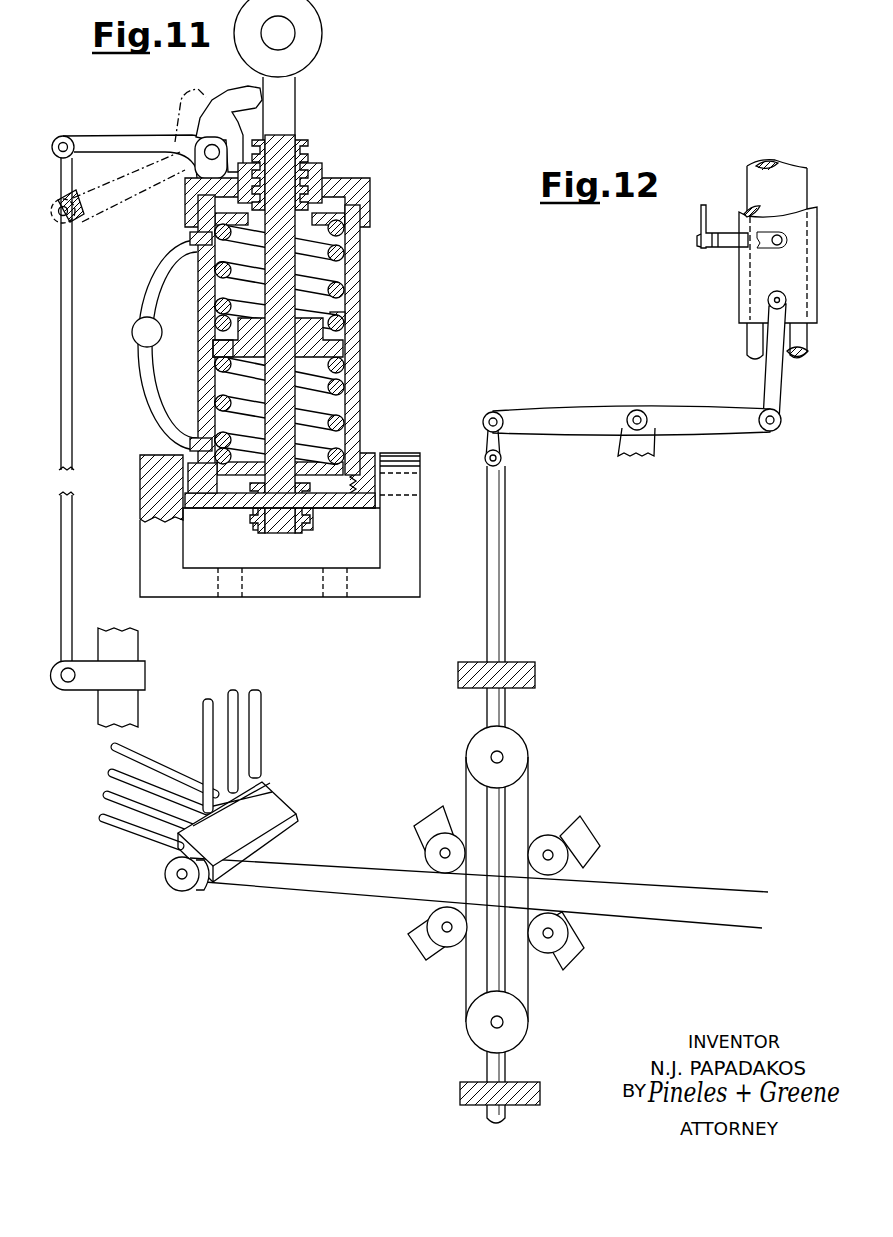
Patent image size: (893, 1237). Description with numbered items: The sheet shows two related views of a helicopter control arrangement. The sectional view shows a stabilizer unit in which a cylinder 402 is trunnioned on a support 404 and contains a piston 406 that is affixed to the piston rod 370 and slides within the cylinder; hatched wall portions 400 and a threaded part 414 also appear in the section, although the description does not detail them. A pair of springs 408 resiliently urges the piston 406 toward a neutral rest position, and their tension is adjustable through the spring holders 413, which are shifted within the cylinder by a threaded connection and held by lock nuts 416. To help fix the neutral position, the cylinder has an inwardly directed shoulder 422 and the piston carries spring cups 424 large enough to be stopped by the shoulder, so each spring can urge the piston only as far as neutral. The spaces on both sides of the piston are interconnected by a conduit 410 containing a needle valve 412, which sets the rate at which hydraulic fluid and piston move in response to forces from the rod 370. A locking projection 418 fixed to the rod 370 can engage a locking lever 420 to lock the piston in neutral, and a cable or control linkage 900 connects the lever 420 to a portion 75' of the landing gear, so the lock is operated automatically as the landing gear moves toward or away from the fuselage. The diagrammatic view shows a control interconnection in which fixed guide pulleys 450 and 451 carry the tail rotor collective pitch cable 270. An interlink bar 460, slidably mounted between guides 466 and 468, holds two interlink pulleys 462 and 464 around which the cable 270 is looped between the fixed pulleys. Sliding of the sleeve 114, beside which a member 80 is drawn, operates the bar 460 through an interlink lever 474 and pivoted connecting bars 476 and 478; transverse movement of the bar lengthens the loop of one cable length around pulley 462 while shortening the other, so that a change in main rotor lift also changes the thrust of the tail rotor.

In FIG. 11, the piston rod 370 is at (288, 100).
In FIG. 12, the piston rod 370 is at (175, 884).
In FIG. 11, the locking projection 418 is at (254, 106).
In FIG. 11, the locking lever 420 is at (193, 127).
In FIG. 11, the threaded screw 414 is at (302, 156).
In FIG. 11, the lock nuts 416 is at (324, 178).
In FIG. 11, the spring holders 413 is at (348, 208).
In FIG. 11, the conduit 410 is at (160, 266).
In FIG. 11, the cylinder 400 is at (360, 258).
In FIG. 11, the springs 408 is at (216, 292).
In FIG. 11, the spring cups 424 is at (350, 318).
In FIG. 11, the needle valve 412 is at (132, 333).
In FIG. 11, the piston 406 is at (232, 344).
In FIG. 11, the inwardly directed shoulder 422 is at (344, 348).
In FIG. 11, the control linkage 900 is at (73, 395).
In FIG. 11, the cylinder 402 is at (352, 418).
In FIG. 11, the support 404 is at (156, 557).
In FIG. 11, the portion of landing gear 75' is at (111, 677).
In FIG. 12, the sleeve 114 is at (740, 287).
In FIG. 12, the rod 80 is at (760, 346).
In FIG. 12, the pivoted connecting bar 478 is at (768, 387).
In FIG. 12, the interlink lever 474 is at (717, 425).
In FIG. 12, the pivoted connecting bar 476 is at (505, 442).
In FIG. 12, the interlink bar 460 is at (496, 570).
In FIG. 12, the guide 466 is at (538, 676).
In FIG. 12, the interlink pulley 462 is at (516, 746).
In FIG. 12, the interlink pulley 464 is at (488, 1034).
In FIG. 12, the guide 468 is at (460, 1093).
In FIG. 12, the tail rotor collective pitch cable 270 is at (342, 893).
In FIG. 12, the fixed guide pulley 450 is at (436, 860).
In FIG. 12, the fixed guide pulley 451 is at (455, 948).